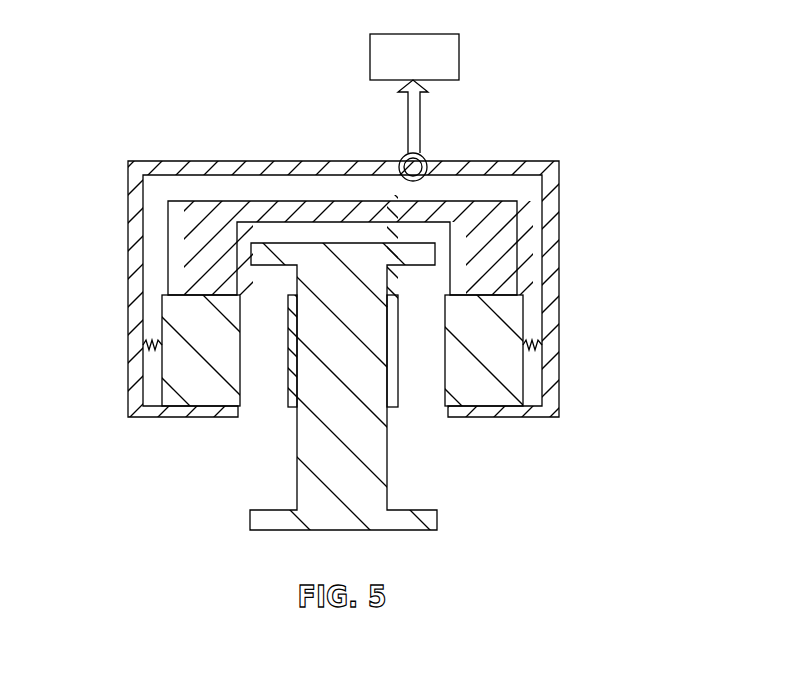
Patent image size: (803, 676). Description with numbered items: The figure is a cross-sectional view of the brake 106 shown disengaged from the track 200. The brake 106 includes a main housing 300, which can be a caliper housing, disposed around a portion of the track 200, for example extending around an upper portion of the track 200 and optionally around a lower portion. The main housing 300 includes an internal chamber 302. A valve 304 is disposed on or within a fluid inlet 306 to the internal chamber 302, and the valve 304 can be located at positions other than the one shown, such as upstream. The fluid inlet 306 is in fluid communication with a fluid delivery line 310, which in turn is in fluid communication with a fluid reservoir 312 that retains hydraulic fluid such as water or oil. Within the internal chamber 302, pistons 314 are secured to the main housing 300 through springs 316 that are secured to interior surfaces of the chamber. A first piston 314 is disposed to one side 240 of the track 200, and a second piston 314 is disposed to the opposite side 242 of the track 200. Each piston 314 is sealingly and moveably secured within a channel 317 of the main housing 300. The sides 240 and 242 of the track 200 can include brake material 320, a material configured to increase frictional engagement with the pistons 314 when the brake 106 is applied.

The brake 106 is at (574, 169).
The track 200 is at (298, 465).
The side of the track 240 is at (298, 430).
The opposite side of the track 242 is at (387, 465).
The main housing 300 is at (558, 360).
The internal chamber 302 is at (483, 177).
The valve 304 is at (402, 158).
The fluid inlet 306 is at (427, 176).
The fluid delivery line 310 is at (422, 120).
The fluid reservoir 312 is at (459, 55).
The piston 314 is at (200, 383).
The spring 316 is at (150, 345).
The channel 317 is at (190, 295).
The brake material 320 is at (293, 295).